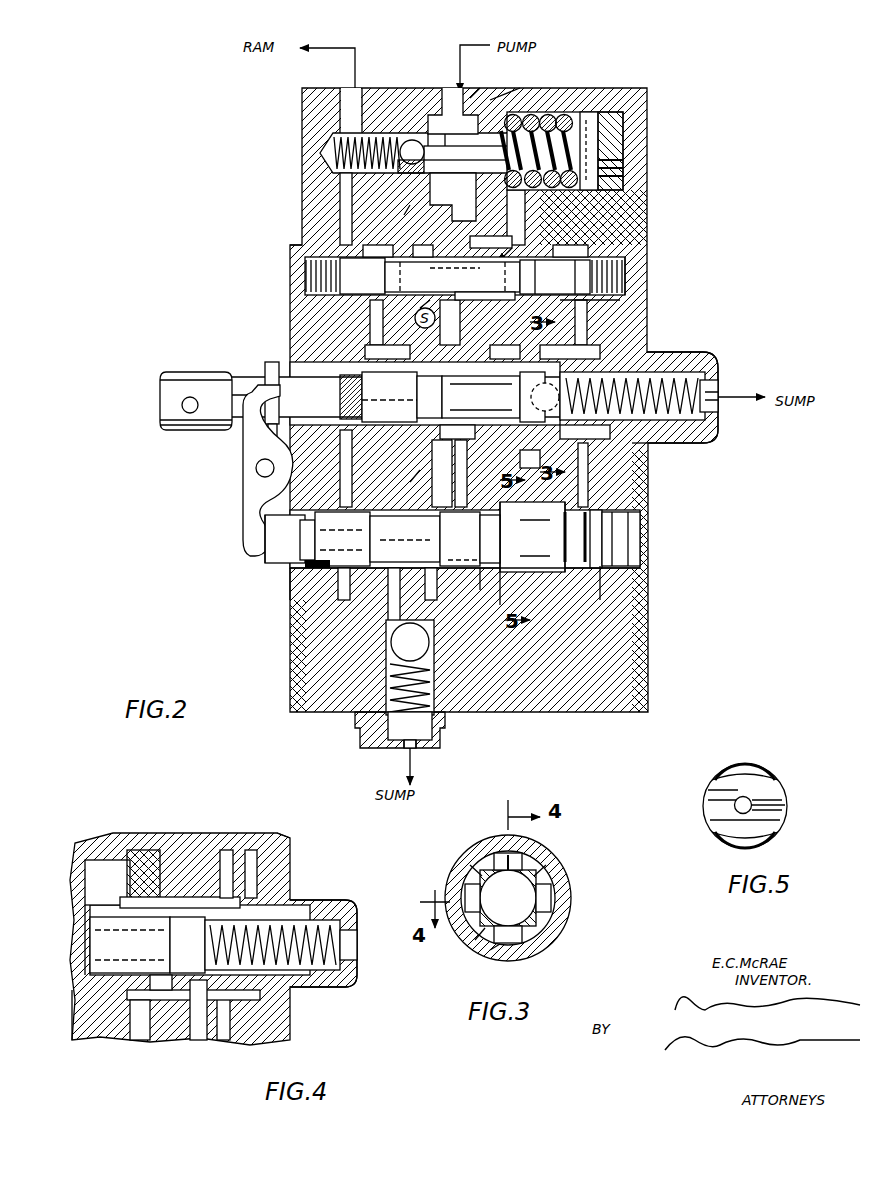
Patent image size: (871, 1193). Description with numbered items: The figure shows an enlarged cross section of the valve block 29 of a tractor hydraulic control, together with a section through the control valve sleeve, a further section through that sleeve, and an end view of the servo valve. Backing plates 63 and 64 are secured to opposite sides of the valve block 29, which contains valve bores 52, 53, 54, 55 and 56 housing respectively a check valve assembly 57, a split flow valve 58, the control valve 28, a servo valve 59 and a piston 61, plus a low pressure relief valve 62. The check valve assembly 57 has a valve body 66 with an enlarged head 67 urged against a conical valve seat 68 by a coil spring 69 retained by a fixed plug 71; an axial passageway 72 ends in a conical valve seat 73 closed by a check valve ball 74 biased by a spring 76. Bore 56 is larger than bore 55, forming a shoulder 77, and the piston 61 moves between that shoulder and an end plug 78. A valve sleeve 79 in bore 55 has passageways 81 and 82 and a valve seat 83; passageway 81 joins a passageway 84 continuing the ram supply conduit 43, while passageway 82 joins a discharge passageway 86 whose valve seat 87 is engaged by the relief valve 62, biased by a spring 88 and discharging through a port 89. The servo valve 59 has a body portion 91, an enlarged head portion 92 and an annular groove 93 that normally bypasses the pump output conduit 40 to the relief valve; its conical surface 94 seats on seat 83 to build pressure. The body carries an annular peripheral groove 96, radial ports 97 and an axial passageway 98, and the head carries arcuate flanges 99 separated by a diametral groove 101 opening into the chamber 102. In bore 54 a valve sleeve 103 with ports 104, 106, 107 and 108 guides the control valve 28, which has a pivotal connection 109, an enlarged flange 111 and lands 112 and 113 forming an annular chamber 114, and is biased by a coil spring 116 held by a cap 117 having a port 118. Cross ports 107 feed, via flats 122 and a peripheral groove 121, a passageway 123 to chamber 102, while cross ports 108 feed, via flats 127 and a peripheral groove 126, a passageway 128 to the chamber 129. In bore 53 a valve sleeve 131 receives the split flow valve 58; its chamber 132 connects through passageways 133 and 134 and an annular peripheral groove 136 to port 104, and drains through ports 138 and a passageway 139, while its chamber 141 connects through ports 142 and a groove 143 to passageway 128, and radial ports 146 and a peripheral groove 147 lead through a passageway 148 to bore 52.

In FIG. 2, the control valve 28 is at (268, 375).
In FIG. 3, the control valve 28 is at (490, 870).
In FIG. 2, the valve block 29 is at (303, 122).
In FIG. 4, the valve block 29 is at (185, 870).
In FIG. 3, the valve block 29 is at (565, 880).
In FIG. 2, the pump output conduit 40 is at (466, 98).
In FIG. 4, the pump output conduit 40 is at (90, 1040).
In FIG. 2, the ram supply conduit 43 is at (350, 95).
In FIG. 2, the valve bore 52 is at (560, 120).
In FIG. 2, the valve bore 53 is at (620, 230).
In FIG. 2, the valve bore 54 is at (615, 332).
In FIG. 2, the valve bore 55 is at (300, 590).
In FIG. 2, the valve bore 56 is at (632, 585).
In FIG. 2, the check valve assembly 57 is at (436, 133).
In FIG. 2, the split flow valve 58 is at (525, 220).
In FIG. 2, the servo valve 59 is at (310, 560).
In FIG. 4, the servo valve 59 is at (92, 930).
In FIG. 5, the servo valve 59 is at (790, 790).
In FIG. 2, the piston 61 is at (560, 528).
In FIG. 2, the low pressure relief valve 62 is at (395, 650).
In FIG. 2, the backing plate 63 is at (298, 698).
In FIG. 2, the backing plate 64 is at (648, 672).
In FIG. 4, the backing plate 64 is at (280, 833).
In FIG. 2, the valve body 66 is at (453, 111).
In FIG. 2, the enlarged head 67 is at (497, 100).
In FIG. 2, the conical valve seat 68 is at (410, 140).
In FIG. 2, the coil spring 69 is at (590, 140).
In FIG. 2, the fixed plug 71 is at (623, 165).
In FIG. 2, the axial passageway 72 is at (460, 205).
In FIG. 2, the conical valve seat 73 is at (412, 140).
In FIG. 2, the check valve ball 74 is at (430, 165).
In FIG. 2, the spring 76 is at (330, 155).
In FIG. 2, the shoulder 77 is at (515, 595).
In FIG. 2, the end plug 78 is at (628, 552).
In FIG. 2, the valve sleeve 79 is at (310, 520).
In FIG. 2, the passageway 81 is at (345, 585).
In FIG. 2, the passageway 82 is at (434, 588).
In FIG. 2, the valve seat 83 is at (460, 478).
In FIG. 2, the passageway 84 is at (340, 190).
In FIG. 2, the discharge passageway 86 is at (398, 598).
In FIG. 2, the valve seat 87 is at (392, 635).
In FIG. 2, the spring 88 is at (370, 722).
In FIG. 2, the port 89 is at (405, 748).
In FIG. 2, the body portion 91 is at (275, 562).
In FIG. 2, the enlarged head portion 92 is at (492, 603).
In FIG. 5, the enlarged head portion 92 is at (786, 808).
In FIG. 2, the annular groove 93 is at (405, 539).
In FIG. 2, the conical surface 94 is at (463, 561).
In FIG. 2, the annular peripheral groove 96 is at (310, 570).
In FIG. 2, the radial ports 97 is at (290, 545).
In FIG. 2, the axial passageway 98 is at (342, 539).
In FIG. 5, the axial passageway 98 is at (745, 808).
In FIG. 2, the arcuate flanges 99 is at (548, 565).
In FIG. 5, the arcuate flanges 99 is at (752, 768).
In FIG. 2, the diametral groove 101 is at (470, 539).
In FIG. 5, the diametral groove 101 is at (712, 792).
In FIG. 2, the chamber 102 is at (525, 560).
In FIG. 2, the valve sleeve 103 is at (272, 362).
In FIG. 4, the valve sleeve 103 is at (118, 890).
In FIG. 3, the valve sleeve 103 is at (478, 940).
In FIG. 2, the port 104 is at (366, 393).
In FIG. 2, the port 106 is at (481, 397).
In FIG. 2, the cross ports 107 is at (547, 390).
In FIG. 4, the cross ports 107 is at (198, 1030).
In FIG. 3, the cross ports 107 is at (470, 895).
In FIG. 2, the cross ports 108 is at (528, 386).
In FIG. 4, the cross ports 108 is at (185, 895).
In FIG. 3, the cross ports 108 is at (512, 860).
In FIG. 2, the pivotal connection 109 is at (178, 405).
In FIG. 2, the enlarged flange 111 is at (236, 393).
In FIG. 2, the land 112 is at (384, 400).
In FIG. 2, the land 113 is at (570, 432).
In FIG. 4, the land 113 is at (187, 945).
In FIG. 2, the annular chamber 114 is at (440, 383).
In FIG. 4, the annular chamber 114 is at (130, 945).
In FIG. 2, the coil spring 116 is at (655, 378).
In FIG. 4, the coil spring 116 is at (285, 922).
In FIG. 2, the cap 117 is at (708, 365).
In FIG. 4, the cap 117 is at (340, 912).
In FIG. 2, the port 118 is at (715, 390).
In FIG. 4, the port 118 is at (352, 945).
In FIG. 2, the peripheral groove 121 is at (503, 440).
In FIG. 4, the peripheral groove 121 is at (130, 850).
In FIG. 4, the flats 122 is at (178, 1030).
In FIG. 3, the flats 122 is at (555, 905).
In FIG. 2, the passageway 123 is at (490, 470).
In FIG. 4, the passageway 123 is at (140, 1040).
In FIG. 2, the peripheral groove 126 is at (648, 445).
In FIG. 4, the peripheral groove 126 is at (262, 998).
In FIG. 4, the flats 127 is at (210, 898).
In FIG. 3, the flats 127 is at (500, 855).
In FIG. 2, the passageway 128 is at (590, 320).
In FIG. 4, the passageway 128 is at (255, 870).
In FIG. 2, the chamber 129 is at (602, 522).
In FIG. 3, the chamber 129 is at (495, 950).
In FIG. 2, the valve sleeve 131 is at (300, 248).
In FIG. 2, the chamber 132 is at (465, 276).
In FIG. 2, the passageway 133 is at (375, 305).
In FIG. 2, the passageway 134 is at (372, 325).
In FIG. 2, the annular peripheral groove 136 is at (351, 397).
In FIG. 2, the ports 138 is at (425, 292).
In FIG. 2, the passageway 139 is at (435, 318).
In FIG. 2, the chamber 141 is at (555, 277).
In FIG. 2, the ports 142 is at (604, 276).
In FIG. 2, the annular peripheral groove 143 is at (625, 288).
In FIG. 2, the radial ports 146 is at (485, 300).
In FIG. 2, the peripheral groove 147 is at (495, 253).
In FIG. 2, the passageway 148 is at (488, 234).